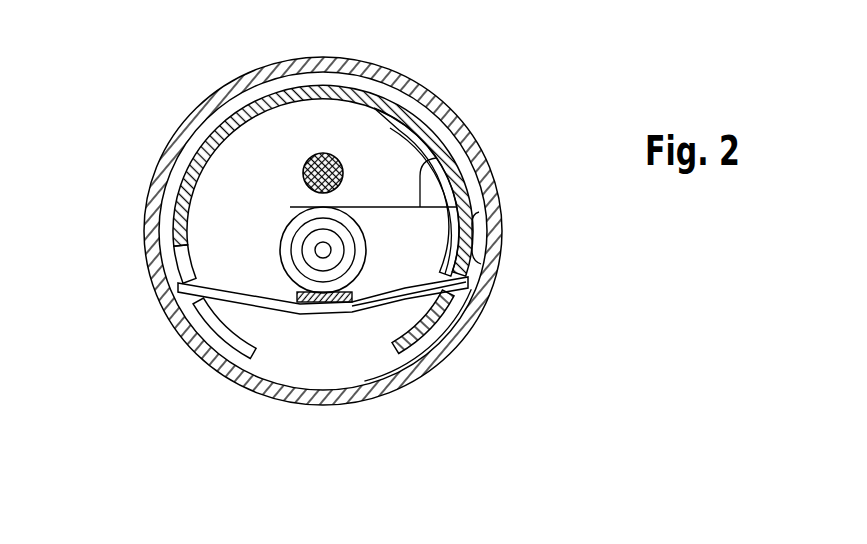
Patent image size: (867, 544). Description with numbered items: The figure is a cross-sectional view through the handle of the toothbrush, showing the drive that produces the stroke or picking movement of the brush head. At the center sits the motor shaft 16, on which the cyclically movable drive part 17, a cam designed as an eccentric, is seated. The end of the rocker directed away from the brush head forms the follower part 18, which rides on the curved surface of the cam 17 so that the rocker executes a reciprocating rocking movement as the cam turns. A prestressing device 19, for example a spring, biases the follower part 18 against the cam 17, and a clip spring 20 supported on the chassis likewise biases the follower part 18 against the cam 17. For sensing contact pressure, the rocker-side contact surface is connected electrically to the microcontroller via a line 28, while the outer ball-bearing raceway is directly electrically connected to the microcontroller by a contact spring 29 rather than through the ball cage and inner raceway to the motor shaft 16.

The motor shaft 16 is at (323, 250).
The drive part 17 is at (281, 243).
The follower part 18 is at (328, 310).
The prestressing device 19 is at (300, 321).
The clip spring 20 is at (365, 310).
The line 28 is at (433, 325).
The contact spring 29 is at (438, 157).